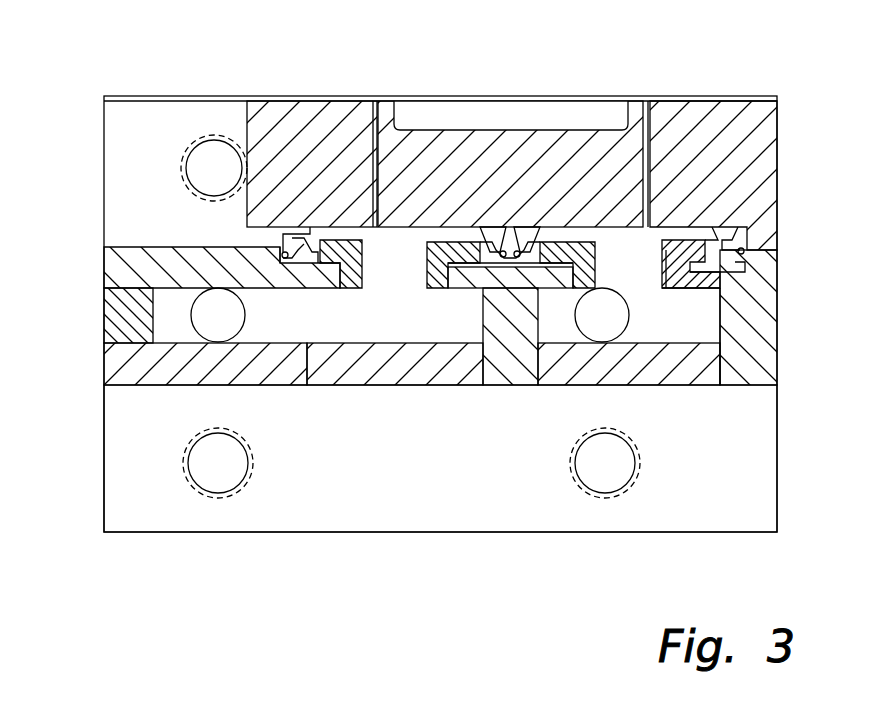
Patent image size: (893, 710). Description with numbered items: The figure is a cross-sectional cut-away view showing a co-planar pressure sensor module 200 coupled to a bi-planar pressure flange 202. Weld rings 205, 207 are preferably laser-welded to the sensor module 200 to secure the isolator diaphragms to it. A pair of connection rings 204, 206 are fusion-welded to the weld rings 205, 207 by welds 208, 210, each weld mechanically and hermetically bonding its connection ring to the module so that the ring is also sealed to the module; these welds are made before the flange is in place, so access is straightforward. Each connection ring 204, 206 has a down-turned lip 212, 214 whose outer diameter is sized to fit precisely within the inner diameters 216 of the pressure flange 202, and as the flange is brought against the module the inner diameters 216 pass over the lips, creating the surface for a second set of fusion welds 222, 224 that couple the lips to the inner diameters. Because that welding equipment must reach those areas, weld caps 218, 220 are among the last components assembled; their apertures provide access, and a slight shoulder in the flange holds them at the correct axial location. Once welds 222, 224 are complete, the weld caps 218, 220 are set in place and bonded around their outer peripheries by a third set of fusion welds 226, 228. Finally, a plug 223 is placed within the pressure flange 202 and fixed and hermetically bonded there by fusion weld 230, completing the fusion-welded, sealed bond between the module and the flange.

The pressure sensor module 200 is at (247, 132).
The bi-planar pressure flange 202 is at (108, 484).
The connection ring 204 is at (658, 250).
The weld ring 205 is at (737, 240).
The connection ring 206 is at (372, 255).
The weld ring 207 is at (283, 250).
The weld 208 is at (744, 251).
The weld 210 is at (283, 258).
The down-turned lip 212 is at (598, 252).
The down-turned lip 214 is at (355, 290).
The inner diameter 216 is at (573, 288).
The weld cap 218 is at (686, 387).
The weld cap 220 is at (400, 388).
The weld 222 is at (683, 288).
The plug 223 is at (104, 343).
The weld 224 is at (340, 288).
The fusion weld 226 is at (723, 385).
The fusion weld 228 is at (307, 385).
The fusion weld 230 is at (104, 288).